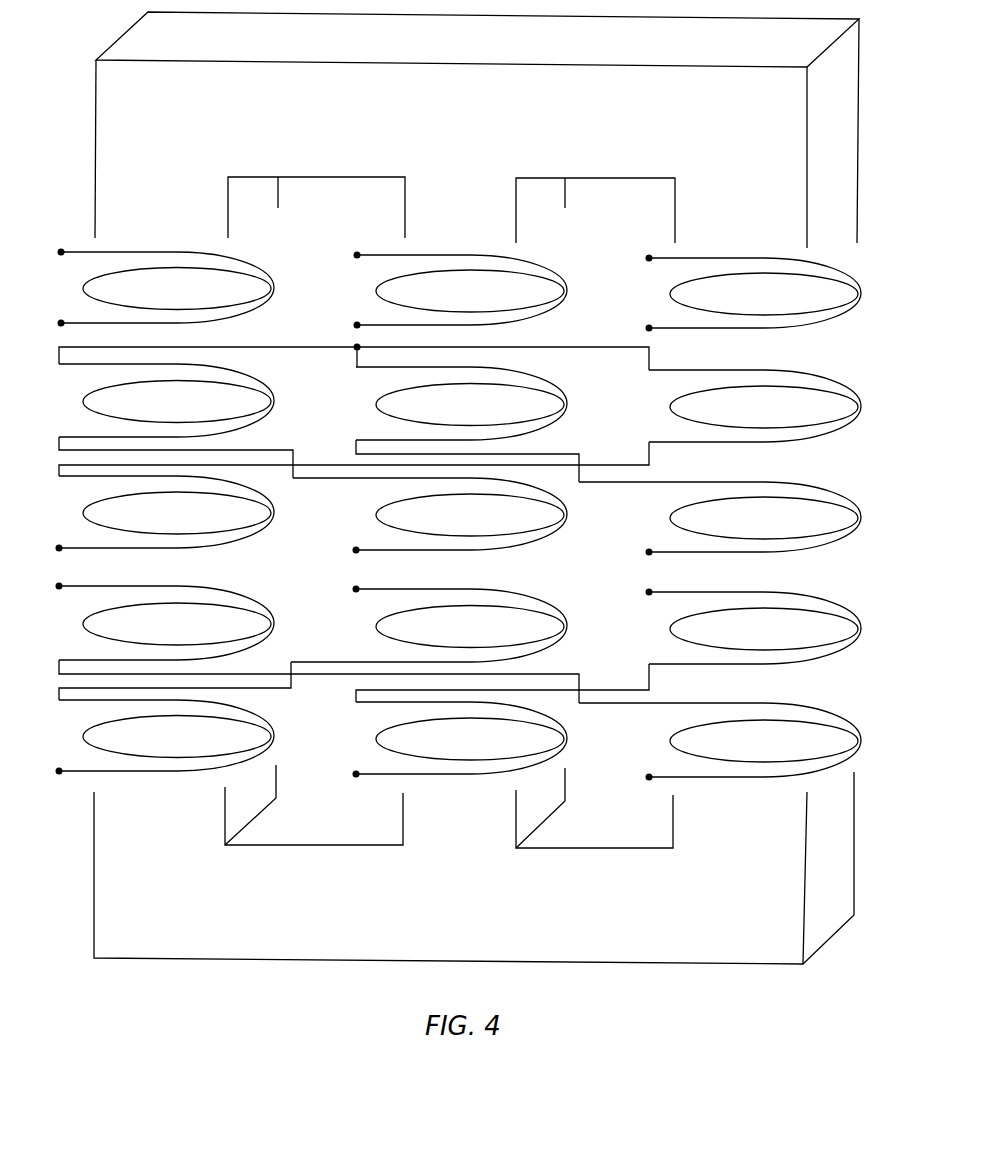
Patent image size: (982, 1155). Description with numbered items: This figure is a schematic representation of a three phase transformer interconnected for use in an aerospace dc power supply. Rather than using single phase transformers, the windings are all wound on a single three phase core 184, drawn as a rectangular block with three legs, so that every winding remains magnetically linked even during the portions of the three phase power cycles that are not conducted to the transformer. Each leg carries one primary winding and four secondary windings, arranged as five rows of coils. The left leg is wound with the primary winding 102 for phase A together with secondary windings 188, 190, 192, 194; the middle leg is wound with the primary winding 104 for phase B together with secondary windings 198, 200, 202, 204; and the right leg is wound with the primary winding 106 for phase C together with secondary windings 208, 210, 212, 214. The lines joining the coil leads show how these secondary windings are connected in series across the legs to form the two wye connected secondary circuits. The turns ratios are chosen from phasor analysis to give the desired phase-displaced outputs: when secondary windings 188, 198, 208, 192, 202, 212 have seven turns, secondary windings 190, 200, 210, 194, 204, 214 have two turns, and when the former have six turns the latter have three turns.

The primary winding for phase A 102 is at (183, 252).
The primary winding for phase B 104 is at (475, 257).
The primary winding for phase C 106 is at (760, 258).
The three phase core 184 is at (468, 909).
The secondary winding 188 is at (268, 384).
The secondary winding 190 is at (268, 496).
The secondary winding 192 is at (268, 608).
The secondary winding 194 is at (268, 720).
The secondary winding 198 is at (561, 387).
The secondary winding 200 is at (561, 498).
The secondary winding 202 is at (561, 610).
The secondary winding 204 is at (561, 722).
The secondary winding 208 is at (787, 370).
The secondary winding 210 is at (787, 482).
The secondary winding 212 is at (787, 592).
The secondary winding 214 is at (787, 703).